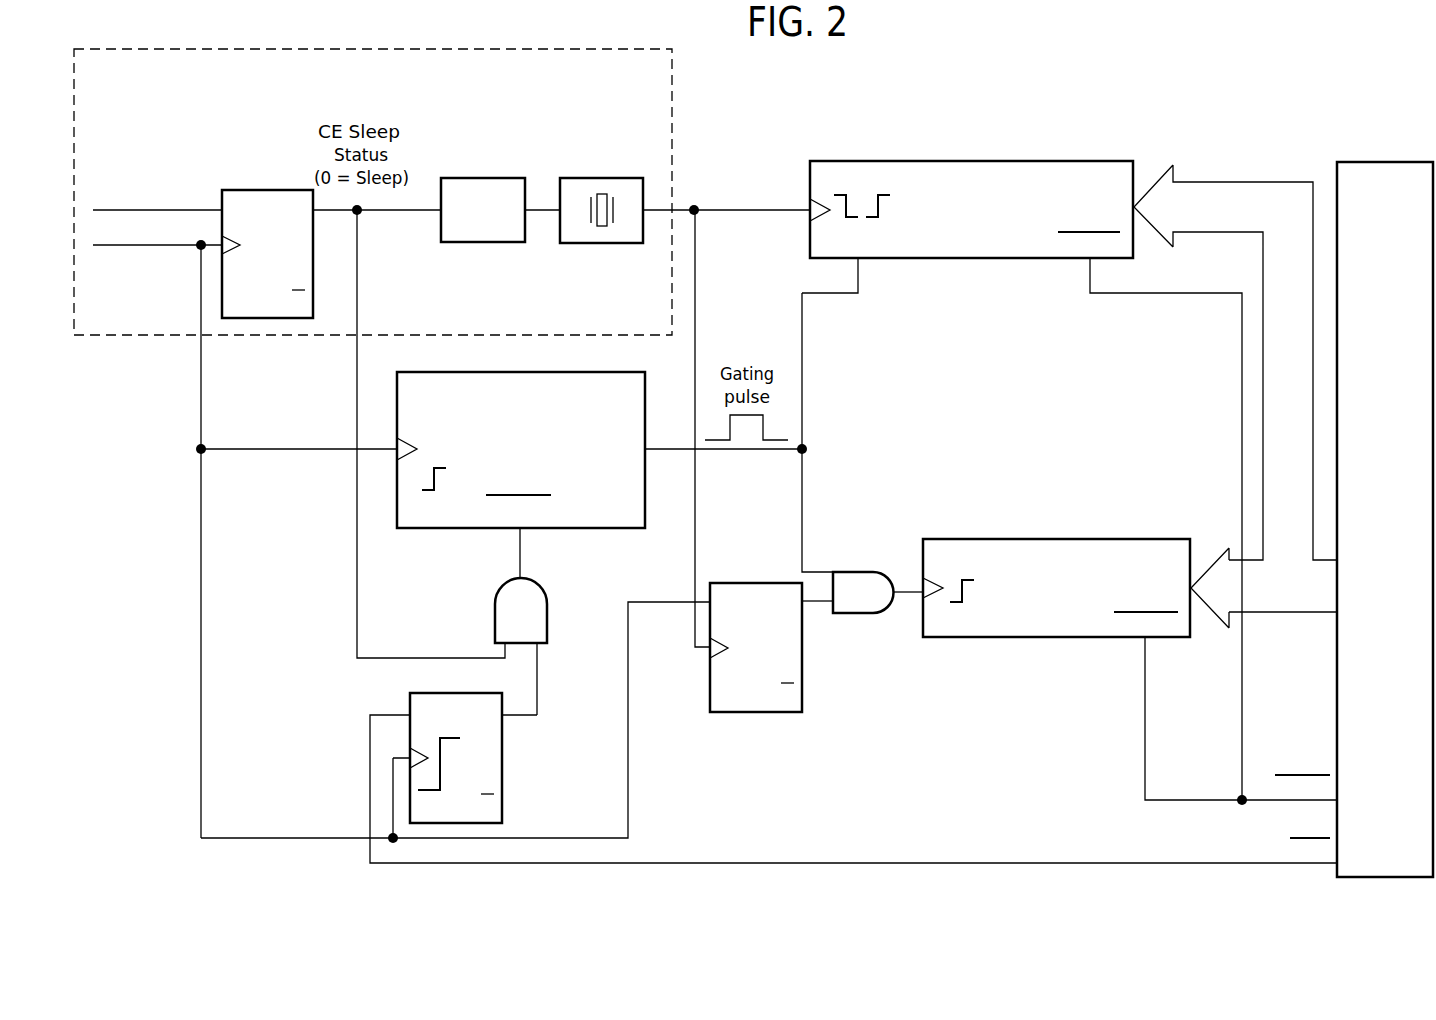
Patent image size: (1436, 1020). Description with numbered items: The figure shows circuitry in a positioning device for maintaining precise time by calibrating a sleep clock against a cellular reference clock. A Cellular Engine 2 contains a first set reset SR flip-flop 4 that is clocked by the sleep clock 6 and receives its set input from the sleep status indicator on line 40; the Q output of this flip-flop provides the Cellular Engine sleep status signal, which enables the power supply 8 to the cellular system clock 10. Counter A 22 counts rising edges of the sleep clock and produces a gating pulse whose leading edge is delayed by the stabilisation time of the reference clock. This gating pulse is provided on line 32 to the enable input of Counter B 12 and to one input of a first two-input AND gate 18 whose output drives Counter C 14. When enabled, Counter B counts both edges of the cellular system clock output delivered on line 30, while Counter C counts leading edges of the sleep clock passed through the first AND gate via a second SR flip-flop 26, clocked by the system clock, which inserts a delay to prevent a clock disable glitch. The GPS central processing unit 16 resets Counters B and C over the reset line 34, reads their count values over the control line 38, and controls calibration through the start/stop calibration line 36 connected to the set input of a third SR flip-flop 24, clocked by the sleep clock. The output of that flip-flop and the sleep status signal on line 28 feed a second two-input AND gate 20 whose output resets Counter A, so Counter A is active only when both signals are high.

The Cellular Engine 2 is at (97, 336).
The first set reset SR flip-flop 4 is at (258, 188).
The sleep clock 6 is at (140, 255).
The power supply 8 is at (479, 244).
The cellular system clock 10 is at (601, 244).
The Counter B 12 is at (1072, 160).
The Counter C 14 is at (973, 538).
The GPS central processing unit 16 is at (1381, 160).
The first two-input AND gate 18 is at (860, 570).
The second two-input AND gate 20 is at (495, 608).
The Counter A 22 is at (597, 535).
The third SR flip-flop 24 is at (502, 765).
The second SR flip-flop 26 is at (802, 658).
The sleep status signal line 28 is at (357, 396).
The cellular system clock output line 30 is at (742, 208).
The gating pulse line 32 is at (802, 357).
The reset signal line 34 is at (1257, 798).
The start/stop calibration line 36 is at (950, 862).
The control line 38 is at (1293, 600).
The sleep status indicator line 40 is at (146, 208).